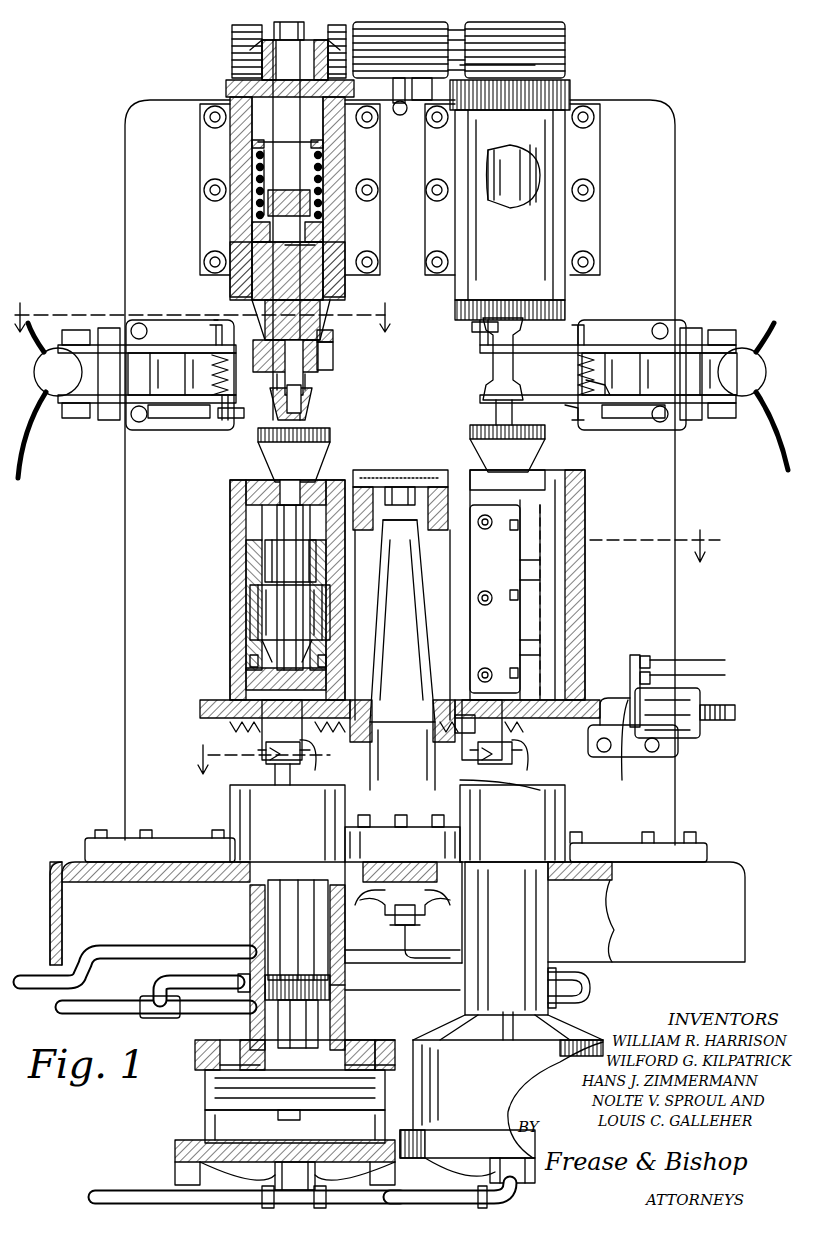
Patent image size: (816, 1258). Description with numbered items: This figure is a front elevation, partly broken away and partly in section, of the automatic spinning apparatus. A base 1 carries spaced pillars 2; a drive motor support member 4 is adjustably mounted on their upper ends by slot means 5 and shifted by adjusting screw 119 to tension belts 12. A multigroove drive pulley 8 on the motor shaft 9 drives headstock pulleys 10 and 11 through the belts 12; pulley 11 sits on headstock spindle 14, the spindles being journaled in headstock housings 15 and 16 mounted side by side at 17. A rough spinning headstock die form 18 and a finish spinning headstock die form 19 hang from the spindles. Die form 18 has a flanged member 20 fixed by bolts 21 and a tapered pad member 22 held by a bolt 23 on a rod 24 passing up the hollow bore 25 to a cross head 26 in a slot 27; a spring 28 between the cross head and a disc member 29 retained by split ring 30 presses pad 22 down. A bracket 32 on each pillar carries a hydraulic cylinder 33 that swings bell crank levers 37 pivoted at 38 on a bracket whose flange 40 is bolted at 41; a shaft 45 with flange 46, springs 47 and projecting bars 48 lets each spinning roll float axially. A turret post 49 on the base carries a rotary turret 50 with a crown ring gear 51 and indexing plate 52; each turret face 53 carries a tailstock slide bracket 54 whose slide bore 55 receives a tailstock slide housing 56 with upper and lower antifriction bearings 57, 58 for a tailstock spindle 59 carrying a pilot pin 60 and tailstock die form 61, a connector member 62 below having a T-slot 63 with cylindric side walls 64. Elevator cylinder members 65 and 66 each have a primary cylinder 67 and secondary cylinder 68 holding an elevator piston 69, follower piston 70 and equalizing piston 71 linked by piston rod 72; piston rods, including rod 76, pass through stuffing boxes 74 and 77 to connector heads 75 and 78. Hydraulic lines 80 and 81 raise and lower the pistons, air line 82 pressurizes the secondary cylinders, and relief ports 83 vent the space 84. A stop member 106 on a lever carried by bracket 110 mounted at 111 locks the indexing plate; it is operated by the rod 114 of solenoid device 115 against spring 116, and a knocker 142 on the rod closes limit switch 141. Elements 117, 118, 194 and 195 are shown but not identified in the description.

The base 1 is at (725, 908).
The pillars 2 is at (125, 465).
The drive motor support member 4 is at (458, 663).
The slot means 5 is at (434, 412).
The multigroove drive pulley 8 is at (426, 100).
The main drive motor shaft 9 is at (393, 92).
The headstock pulley 10 is at (236, 58).
The headstock pulley 11 is at (538, 62).
The belts 12 is at (568, 32).
The headstock spindle 14 is at (514, 176).
The headstock housing 15 is at (258, 108).
The headstock housing 16 is at (565, 148).
The headstock housing mounting 17 is at (204, 265).
The rough spinning headstock die form 18 is at (333, 355).
The finish spinning headstock die form 19 is at (478, 356).
The flanged member 20 is at (325, 370).
The bolts 21 is at (324, 330).
The tapered plug or pad member 22 is at (316, 400).
The bolt 23 is at (312, 418).
The rod 24 is at (252, 250).
The hollow bore 25 is at (318, 245).
The cross head 26 is at (268, 238).
The slot 27 is at (326, 205).
The spring 28 is at (264, 172).
The disc member 29 is at (252, 143).
The split ring 30 is at (258, 142).
The bracket 32 is at (112, 328).
The hydraulic cylinder 33 is at (42, 374).
The bell crank levers 37 is at (122, 345).
The pivot 38 is at (180, 418).
The flange 40 is at (170, 320).
The bolts 41 is at (147, 328).
The shaft 45 is at (214, 320).
The flange 46 is at (230, 366).
The springs 47 is at (605, 395).
The projecting bar 48 is at (236, 418).
The rotary turret post 49 is at (412, 612).
The rotary turret 50 is at (365, 482).
The crown ring gear 51 is at (275, 385).
The indexing plate 52 is at (200, 710).
The vertical faces 53 is at (480, 505).
The tailstock slide bracket 54 is at (230, 518).
The cylindric tailstock slide bore 55 is at (250, 530).
The tailstock slide housing 56 is at (75, 418).
The upper antifriction bearing 57 is at (246, 580).
The lower antifriction bearing 58 is at (246, 650).
The tailstock spindle 59 is at (180, 378).
The pilot pin 60 is at (230, 492).
The tailstock die form 61 is at (258, 473).
The connector member 62 is at (376, 730).
The T-slot 63 is at (315, 766).
The side walls 64 is at (266, 750).
The tailstock operating or elevator cylinder member 65 is at (345, 978).
The tailstock operating or elevator cylinder member 66 is at (548, 928).
The primary cylinder 67 is at (347, 990).
The secondary cylinder 68 is at (205, 1120).
The actuating or elevator piston 69 is at (250, 950).
The follower piston 70 is at (298, 1024).
The equalizing piston 71 is at (220, 1090).
The elevator piston rod 72 is at (245, 1048).
The stuffing box 74 is at (287, 823).
The enlarged connector head 75 is at (268, 765).
The elevator piston rod 76 is at (560, 790).
The stuffing box 77 is at (512, 823).
The enlarged connector head 78 is at (473, 727).
The common hydraulic line 80 is at (115, 1015).
The common hydraulic line 81 is at (128, 944).
The common air line 82 is at (108, 1190).
The relief openings or ports 83 is at (355, 1052).
The space above equalizing piston 84 is at (382, 1060).
The stop member 106 is at (600, 700).
The bracket 110 is at (642, 757).
The bracket mounting 111 is at (604, 752).
The rod 114 is at (622, 785).
The solenoid control device 115 is at (680, 738).
The spring 116 is at (718, 720).
The lever 117 is at (43, 315).
The lever 118 is at (28, 445).
The adjusting screw 119 is at (400, 115).
The limit switch 141 is at (650, 660).
The knocker 142 is at (635, 655).
The rod 194 is at (715, 660).
The rod 195 is at (712, 677).